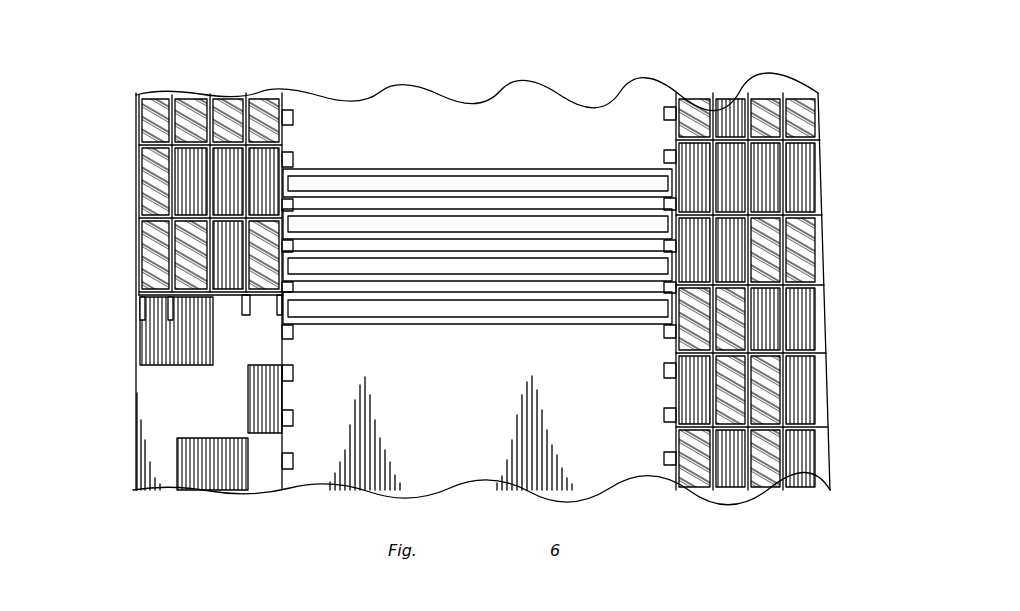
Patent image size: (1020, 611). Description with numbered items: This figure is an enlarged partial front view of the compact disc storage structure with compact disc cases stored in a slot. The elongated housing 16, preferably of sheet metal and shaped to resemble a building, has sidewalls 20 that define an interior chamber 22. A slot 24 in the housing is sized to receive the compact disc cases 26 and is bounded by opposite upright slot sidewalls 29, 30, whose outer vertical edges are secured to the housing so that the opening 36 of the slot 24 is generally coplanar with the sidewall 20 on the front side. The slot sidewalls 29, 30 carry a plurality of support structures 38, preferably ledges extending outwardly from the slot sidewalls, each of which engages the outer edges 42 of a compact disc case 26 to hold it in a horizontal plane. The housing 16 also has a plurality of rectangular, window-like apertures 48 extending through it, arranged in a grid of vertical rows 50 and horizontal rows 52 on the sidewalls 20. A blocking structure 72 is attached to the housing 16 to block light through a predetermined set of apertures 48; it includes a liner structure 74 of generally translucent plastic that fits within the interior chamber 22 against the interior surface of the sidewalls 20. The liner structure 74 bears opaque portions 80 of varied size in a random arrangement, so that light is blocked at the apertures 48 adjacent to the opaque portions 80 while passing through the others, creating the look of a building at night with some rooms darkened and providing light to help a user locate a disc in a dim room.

The elongated housing 16 is at (136, 276).
The sidewalls 20 is at (140, 300).
The interior chamber 22 is at (165, 382).
The slot 24 is at (607, 452).
The compact disc cases 26 is at (497, 210).
The slot sidewall 29 is at (285, 482).
The slot sidewall 30 is at (675, 483).
The opening 36 is at (422, 450).
The support structures 38 is at (667, 95).
The outer edges 42 is at (296, 225).
The apertures 48 is at (190, 188).
The vertical rows 50 is at (230, 76).
The horizontal rows 52 is at (112, 140).
The blocking structure 72 is at (163, 411).
The liner structure 74 is at (150, 243).
The opaque portions 80 is at (250, 393).